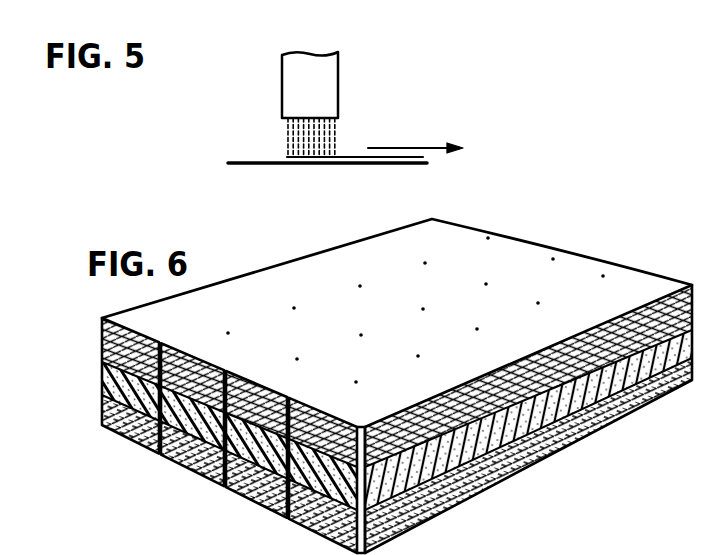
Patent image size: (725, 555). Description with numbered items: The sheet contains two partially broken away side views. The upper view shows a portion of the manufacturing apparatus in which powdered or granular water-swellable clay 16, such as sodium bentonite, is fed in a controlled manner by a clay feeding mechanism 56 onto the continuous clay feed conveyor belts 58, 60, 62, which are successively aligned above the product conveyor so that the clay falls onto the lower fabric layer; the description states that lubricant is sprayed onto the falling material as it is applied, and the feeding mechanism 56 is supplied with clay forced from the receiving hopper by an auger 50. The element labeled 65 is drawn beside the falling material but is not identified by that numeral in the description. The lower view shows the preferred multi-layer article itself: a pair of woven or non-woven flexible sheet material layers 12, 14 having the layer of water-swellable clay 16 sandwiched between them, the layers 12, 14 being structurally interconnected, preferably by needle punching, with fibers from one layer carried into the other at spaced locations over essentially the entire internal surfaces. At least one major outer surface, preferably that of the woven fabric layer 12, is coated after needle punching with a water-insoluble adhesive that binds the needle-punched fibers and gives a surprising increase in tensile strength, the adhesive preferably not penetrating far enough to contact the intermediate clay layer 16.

In FIG. 6, the flexible sheet material layer 12 is at (99, 350).
In FIG. 6, the flexible sheet material layer 14 is at (100, 408).
In FIG. 5, the water-swellable clay layer 16 is at (352, 158).
In FIG. 6, the water-swellable clay layer 16 is at (100, 375).
In FIG. 6, the auger 50 is at (0, 538).
In FIG. 5, the clay feeding mechanism 56 is at (287, 100).
In FIG. 5, the clay feed conveyor belt 58 is at (322, 182).
In FIG. 5, the clay feed conveyor belt 60 is at (322, 182).
In FIG. 5, the clay feed conveyor belt 62 is at (365, 165).
In FIG. 5, the extruded fibers 65 is at (263, 128).